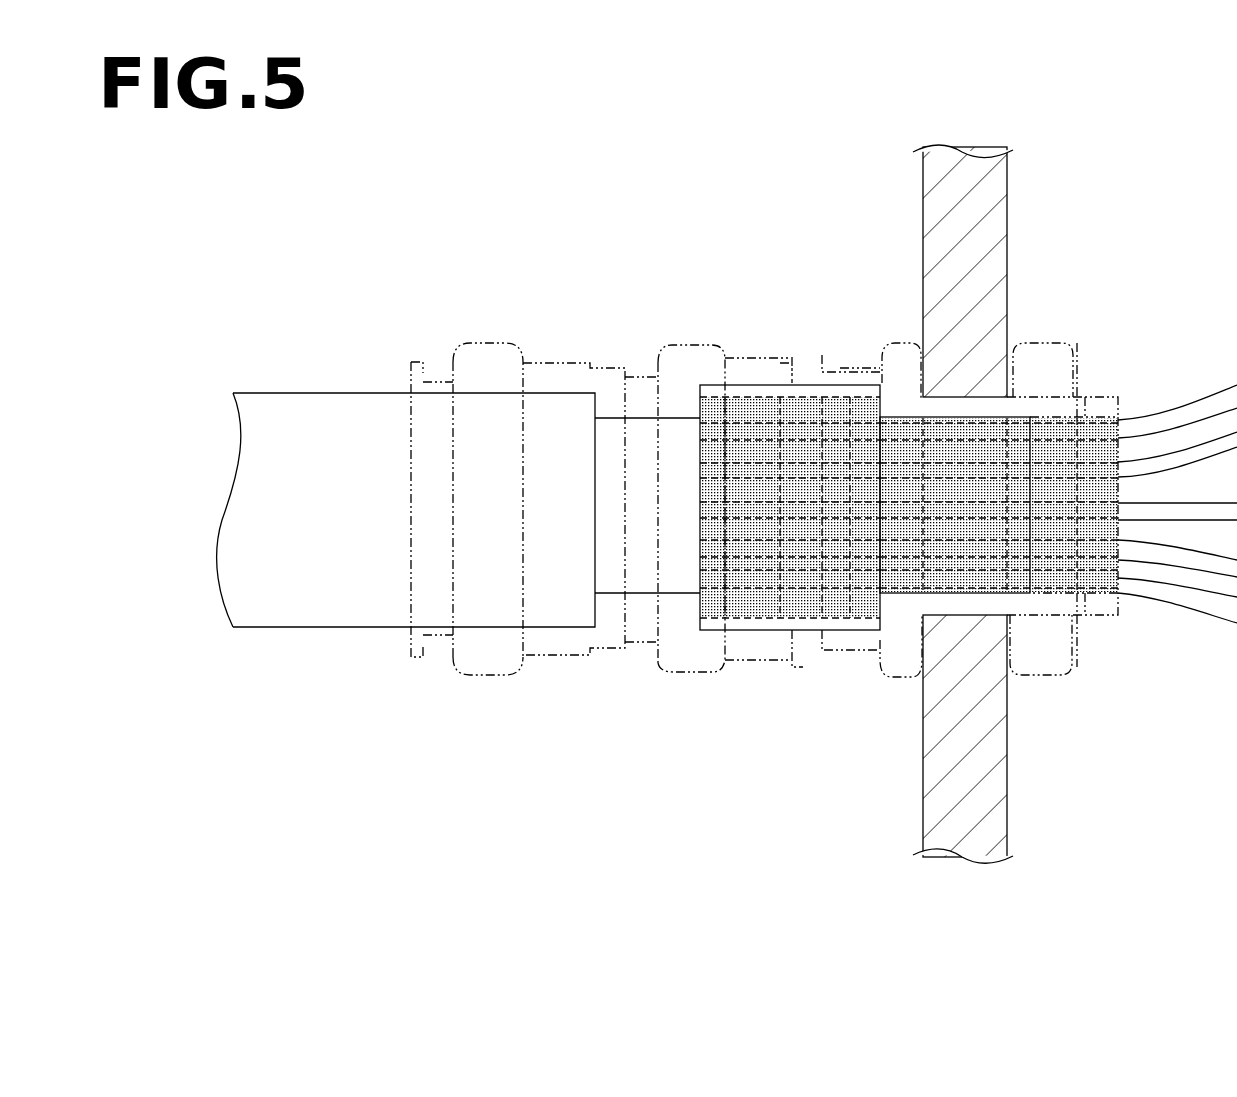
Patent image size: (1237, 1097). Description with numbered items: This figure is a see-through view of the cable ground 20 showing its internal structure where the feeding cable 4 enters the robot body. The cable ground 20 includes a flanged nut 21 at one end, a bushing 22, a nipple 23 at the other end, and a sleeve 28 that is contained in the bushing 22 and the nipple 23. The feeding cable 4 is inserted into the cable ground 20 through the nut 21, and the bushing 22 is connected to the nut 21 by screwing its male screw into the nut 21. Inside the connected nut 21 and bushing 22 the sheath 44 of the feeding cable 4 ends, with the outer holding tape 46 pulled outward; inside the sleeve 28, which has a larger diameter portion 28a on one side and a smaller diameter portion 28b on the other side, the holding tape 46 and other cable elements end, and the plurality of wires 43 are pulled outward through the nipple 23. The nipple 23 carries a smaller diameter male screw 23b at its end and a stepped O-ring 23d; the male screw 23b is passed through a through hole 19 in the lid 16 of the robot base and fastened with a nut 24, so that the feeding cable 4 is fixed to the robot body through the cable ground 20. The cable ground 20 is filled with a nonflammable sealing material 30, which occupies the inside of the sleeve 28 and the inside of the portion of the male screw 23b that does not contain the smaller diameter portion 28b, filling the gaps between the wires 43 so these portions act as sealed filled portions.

The feeding cable 4 is at (296, 388).
The sheath 44 is at (330, 587).
The outer holding tape 46 is at (643, 597).
The cable ground 20 is at (704, 205).
The flanged nut 21 is at (485, 338).
The bushing 22 is at (700, 338).
The nipple 23 is at (865, 362).
The smaller diameter male screw 23b is at (1095, 385).
The stepped O-ring 23d is at (807, 670).
The nut 24 is at (1045, 340).
The sleeve 28 is at (808, 385).
The larger diameter portion 28a is at (752, 630).
The smaller diameter portion 28b is at (905, 597).
The sealing material 30 is at (903, 450).
The lid 16 is at (1000, 198).
The through hole 19 is at (985, 615).
The wires 43 is at (840, 385).